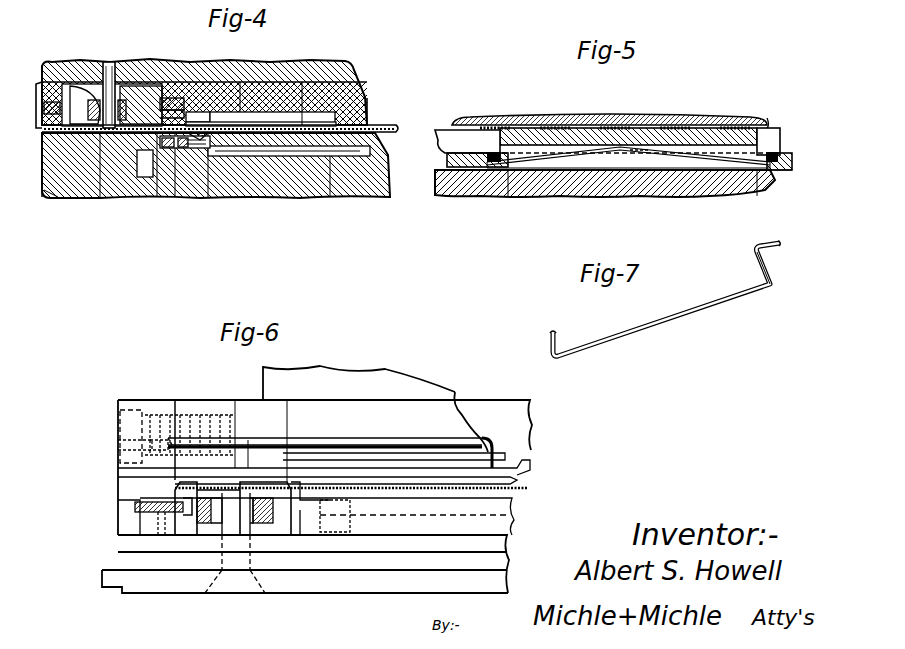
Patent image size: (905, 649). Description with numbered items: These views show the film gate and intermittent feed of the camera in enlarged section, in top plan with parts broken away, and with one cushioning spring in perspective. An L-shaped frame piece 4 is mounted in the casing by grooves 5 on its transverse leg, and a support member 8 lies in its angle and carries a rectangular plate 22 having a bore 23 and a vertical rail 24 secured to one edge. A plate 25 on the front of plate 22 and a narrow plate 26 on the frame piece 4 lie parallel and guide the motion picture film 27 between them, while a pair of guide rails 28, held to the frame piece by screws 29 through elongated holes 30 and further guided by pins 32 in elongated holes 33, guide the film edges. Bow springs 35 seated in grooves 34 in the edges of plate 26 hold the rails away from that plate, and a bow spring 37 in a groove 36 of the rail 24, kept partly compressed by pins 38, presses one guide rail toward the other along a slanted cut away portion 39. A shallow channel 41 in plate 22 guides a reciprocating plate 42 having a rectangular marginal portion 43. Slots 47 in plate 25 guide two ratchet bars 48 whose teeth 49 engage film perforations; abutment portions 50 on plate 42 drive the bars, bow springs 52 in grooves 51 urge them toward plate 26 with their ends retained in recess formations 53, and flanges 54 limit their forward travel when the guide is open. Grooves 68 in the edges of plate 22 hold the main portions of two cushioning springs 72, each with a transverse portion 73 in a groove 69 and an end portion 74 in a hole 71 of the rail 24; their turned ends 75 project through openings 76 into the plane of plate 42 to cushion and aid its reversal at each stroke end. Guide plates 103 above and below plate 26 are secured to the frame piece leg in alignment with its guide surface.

In FIG. 4, the frame piece 4 is at (350, 72).
In FIG. 6, the frame piece 4 is at (176, 595).
In FIG. 6, the grooves 5 is at (120, 576).
In FIG. 6, the support member 8 is at (332, 384).
In FIG. 4, the plate 22 is at (142, 197).
In FIG. 5, the plate 22 is at (692, 186).
In FIG. 6, the plate 22 is at (484, 414).
In FIG. 4, the bore 23 is at (226, 156).
In FIG. 4, the rail 24 is at (40, 182).
In FIG. 6, the rail 24 is at (140, 406).
In FIG. 4, the plate 25 is at (394, 130).
In FIG. 5, the plate 25 is at (460, 132).
In FIG. 6, the plate 25 is at (517, 480).
In FIG. 4, the plate 26 is at (367, 100).
In FIG. 5, the plate 26 is at (550, 118).
In FIG. 6, the plate 26 is at (515, 500).
In FIG. 4, the motion picture film 27 is at (298, 125).
In FIG. 5, the motion picture film 27 is at (768, 126).
In FIG. 6, the motion picture film 27 is at (530, 488).
In FIG. 4, the guide rails 28 is at (142, 86).
In FIG. 6, the guide rails 28 is at (204, 525).
In FIG. 4, the screws 29 is at (130, 83).
In FIG. 6, the screws 29 is at (229, 527).
In FIG. 6, the holes 30 is at (243, 532).
In FIG. 4, the pins 32 is at (109, 62).
In FIG. 4, the holes 33 is at (94, 100).
In FIG. 4, the groove 34 is at (196, 112).
In FIG. 4, the bow springs 35 is at (170, 98).
In FIG. 6, the bow springs 35 is at (288, 480).
In FIG. 4, the groove 36 is at (40, 90).
In FIG. 6, the groove 36 is at (182, 505).
In FIG. 4, the bow spring 37 is at (62, 62).
In FIG. 6, the bow spring 37 is at (135, 507).
In FIG. 6, the pins 38 is at (160, 520).
In FIG. 4, the cut away portion 39 is at (58, 198).
In FIG. 6, the cut away portion 39 is at (178, 496).
In FIG. 4, the channel 41 is at (151, 180).
In FIG. 6, the channel 41 is at (258, 462).
In FIG. 4, the plate 42 is at (280, 198).
In FIG. 5, the plate 42 is at (784, 172).
In FIG. 6, the plate 42 is at (524, 470).
In FIG. 4, the rectangular marginal portion 43 is at (182, 150).
In FIG. 4, the slots 47 is at (212, 150).
In FIG. 5, the slots 47 is at (445, 160).
In FIG. 4, the ratchet bars 48 is at (240, 115).
In FIG. 5, the ratchet bars 48 is at (610, 126).
In FIG. 4, the teeth 49 is at (215, 122).
In FIG. 5, the teeth 49 is at (526, 128).
In FIG. 4, the abutment portions 50 is at (172, 150).
In FIG. 5, the abutment portions 50 is at (508, 172).
In FIG. 4, the grooves 51 is at (192, 142).
In FIG. 5, the grooves 51 is at (618, 157).
In FIG. 4, the bow springs 52 is at (198, 145).
In FIG. 5, the bow springs 52 is at (590, 166).
In FIG. 5, the recess formations 53 is at (494, 152).
In FIG. 4, the flanges 54 is at (203, 136).
In FIG. 5, the flanges 54 is at (640, 155).
In FIG. 6, the grooves 68 is at (512, 456).
In FIG. 6, the grooves 69 is at (160, 442).
In FIG. 6, the holes 71 is at (118, 445).
In FIG. 7, the springs 72 is at (682, 312).
In FIG. 6, the springs 72 is at (370, 438).
In FIG. 7, the transverse portion 73 is at (762, 268).
In FIG. 6, the transverse portion 73 is at (170, 438).
In FIG. 7, the longitudinal end portion 74 is at (778, 247).
In FIG. 6, the longitudinal end portion 74 is at (152, 445).
In FIG. 7, the turned end 75 is at (556, 342).
In FIG. 6, the turned end 75 is at (496, 462).
In FIG. 6, the openings 76 is at (457, 398).
In FIG. 6, the guide plates 103 is at (516, 518).